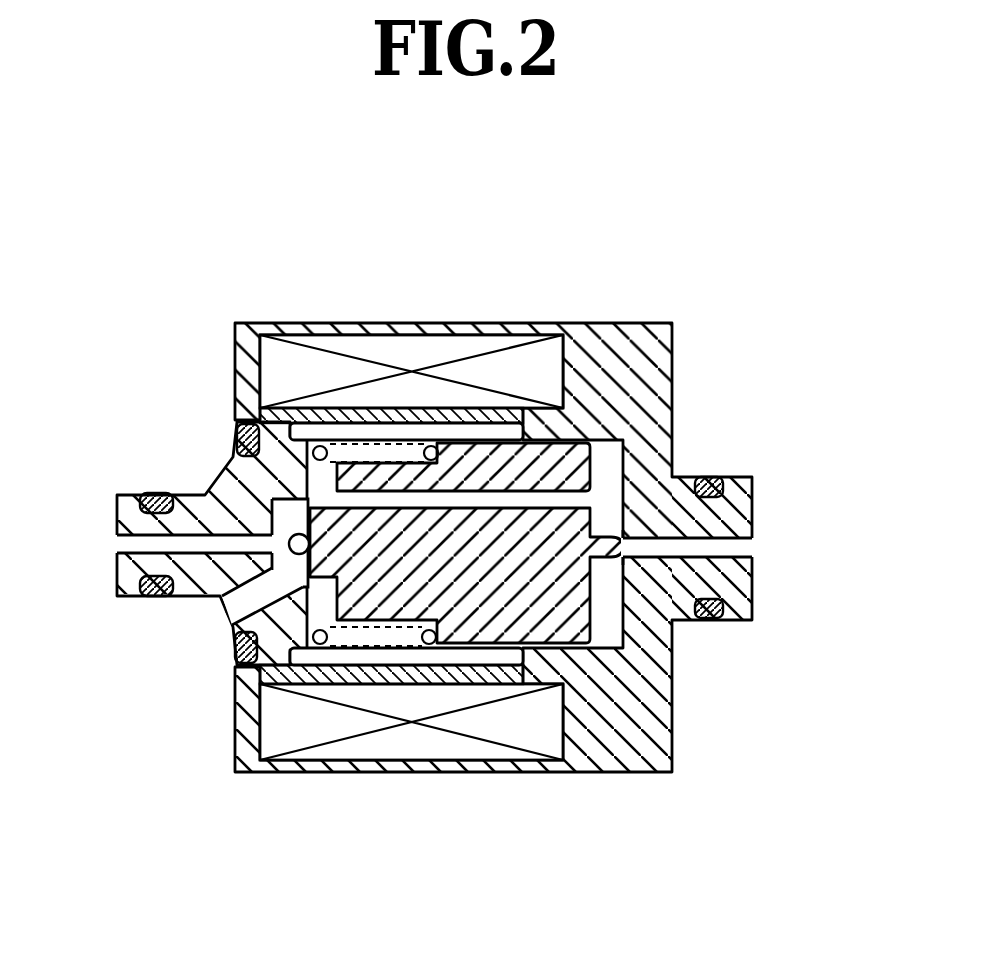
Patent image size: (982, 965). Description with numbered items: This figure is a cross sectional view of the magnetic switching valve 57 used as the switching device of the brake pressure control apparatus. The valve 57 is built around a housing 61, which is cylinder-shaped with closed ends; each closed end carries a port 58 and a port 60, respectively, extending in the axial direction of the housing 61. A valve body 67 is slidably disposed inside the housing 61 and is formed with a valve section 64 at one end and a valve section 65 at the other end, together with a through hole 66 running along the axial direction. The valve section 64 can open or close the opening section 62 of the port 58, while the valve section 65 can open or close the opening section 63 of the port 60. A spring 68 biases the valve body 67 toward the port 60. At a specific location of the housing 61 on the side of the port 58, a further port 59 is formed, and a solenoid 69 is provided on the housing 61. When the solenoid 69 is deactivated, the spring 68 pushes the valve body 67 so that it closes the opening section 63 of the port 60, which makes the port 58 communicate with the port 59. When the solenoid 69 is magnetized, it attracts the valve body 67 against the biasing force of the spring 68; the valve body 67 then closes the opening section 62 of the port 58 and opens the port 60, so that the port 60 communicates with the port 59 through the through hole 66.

The magnetic switching valve 57 is at (704, 250).
The port 58 is at (120, 538).
The port 59 is at (233, 612).
The port 60 is at (757, 547).
The housing 61 is at (620, 342).
The opening section 62 is at (243, 498).
The opening section 63 is at (614, 506).
The valve section 64 is at (302, 552).
The valve section 65 is at (620, 560).
The through hole 66 is at (492, 498).
The valve body 67 is at (486, 418).
The spring 68 is at (372, 442).
The solenoid 69 is at (293, 359).